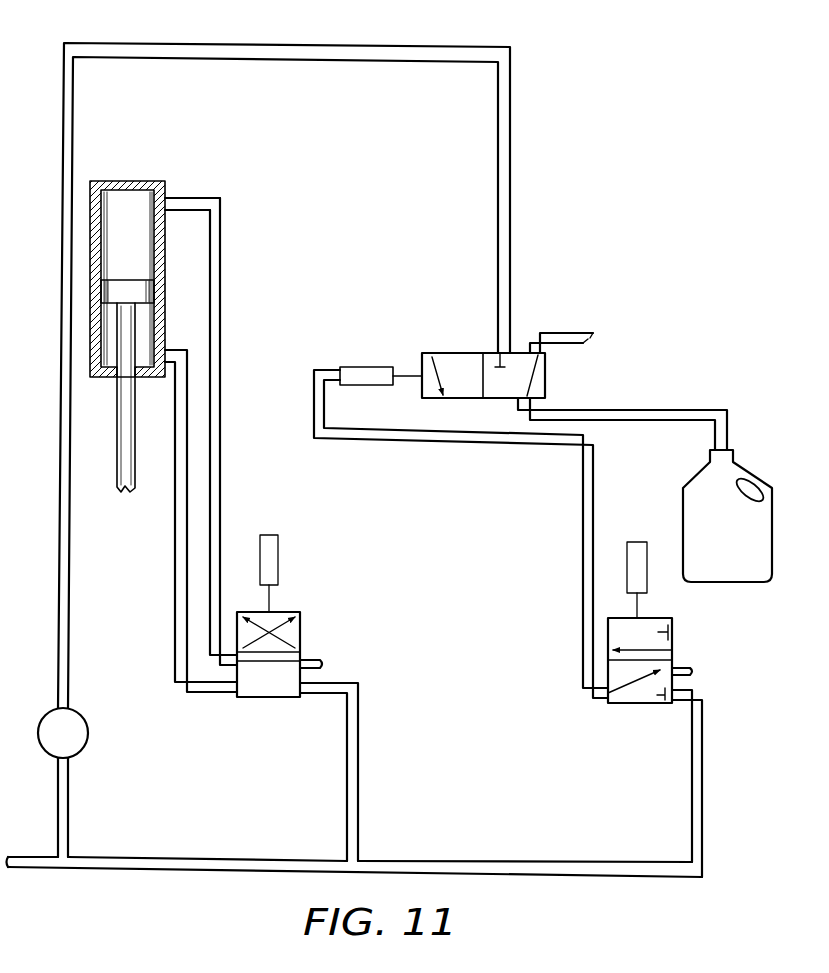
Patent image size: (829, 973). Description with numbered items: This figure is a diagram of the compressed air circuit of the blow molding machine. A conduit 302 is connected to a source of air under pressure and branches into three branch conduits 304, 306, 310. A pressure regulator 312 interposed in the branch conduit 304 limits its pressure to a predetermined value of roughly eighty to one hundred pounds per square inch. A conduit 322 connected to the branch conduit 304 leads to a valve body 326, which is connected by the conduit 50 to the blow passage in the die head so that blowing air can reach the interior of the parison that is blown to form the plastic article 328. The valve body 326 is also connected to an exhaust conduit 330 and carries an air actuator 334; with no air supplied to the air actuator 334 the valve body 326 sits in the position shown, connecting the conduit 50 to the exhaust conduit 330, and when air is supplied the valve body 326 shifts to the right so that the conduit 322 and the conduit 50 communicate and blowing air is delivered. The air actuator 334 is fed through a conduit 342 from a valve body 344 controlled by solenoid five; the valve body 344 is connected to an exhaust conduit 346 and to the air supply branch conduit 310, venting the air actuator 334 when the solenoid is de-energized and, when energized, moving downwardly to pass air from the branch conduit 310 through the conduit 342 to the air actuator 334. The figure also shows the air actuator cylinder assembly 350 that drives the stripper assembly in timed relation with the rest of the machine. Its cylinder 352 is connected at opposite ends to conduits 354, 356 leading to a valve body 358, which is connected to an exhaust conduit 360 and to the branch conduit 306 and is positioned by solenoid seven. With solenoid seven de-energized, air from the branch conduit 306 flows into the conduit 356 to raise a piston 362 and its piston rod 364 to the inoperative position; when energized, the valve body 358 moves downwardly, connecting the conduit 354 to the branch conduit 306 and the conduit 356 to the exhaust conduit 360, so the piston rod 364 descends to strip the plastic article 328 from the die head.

The conduit 50 is at (646, 410).
The conduit 302 is at (32, 866).
The branch conduit 304 is at (64, 811).
The branch conduit 306 is at (358, 809).
The branch conduit 310 is at (702, 813).
The pressure regulator 312 is at (88, 733).
The conduit 322 is at (498, 128).
The valve body 326 is at (545, 376).
The plastic article 328 is at (722, 572).
The exhaust conduit 330 is at (577, 340).
The air actuator 334 is at (368, 352).
The conduit 342 is at (585, 465).
The valve body 344 is at (672, 636).
The exhaust conduit 346 is at (690, 671).
The air actuator cylinder assembly 350 is at (169, 181).
The cylinder 352 is at (165, 255).
The conduit 354 is at (220, 393).
The conduit 356 is at (185, 529).
The valve body 358 is at (293, 633).
The exhaust conduit 360 is at (312, 659).
The piston 362 is at (118, 292).
The piston rod 364 is at (128, 455).